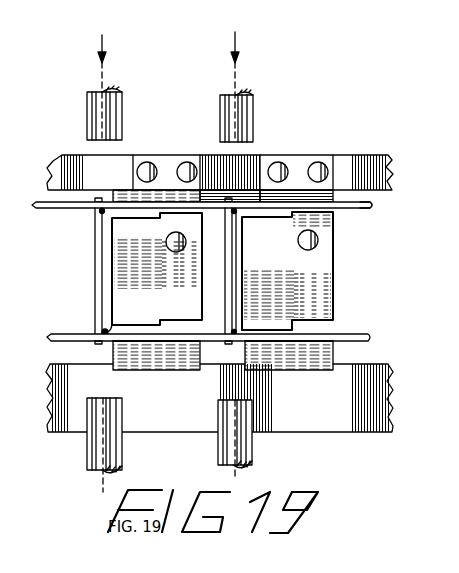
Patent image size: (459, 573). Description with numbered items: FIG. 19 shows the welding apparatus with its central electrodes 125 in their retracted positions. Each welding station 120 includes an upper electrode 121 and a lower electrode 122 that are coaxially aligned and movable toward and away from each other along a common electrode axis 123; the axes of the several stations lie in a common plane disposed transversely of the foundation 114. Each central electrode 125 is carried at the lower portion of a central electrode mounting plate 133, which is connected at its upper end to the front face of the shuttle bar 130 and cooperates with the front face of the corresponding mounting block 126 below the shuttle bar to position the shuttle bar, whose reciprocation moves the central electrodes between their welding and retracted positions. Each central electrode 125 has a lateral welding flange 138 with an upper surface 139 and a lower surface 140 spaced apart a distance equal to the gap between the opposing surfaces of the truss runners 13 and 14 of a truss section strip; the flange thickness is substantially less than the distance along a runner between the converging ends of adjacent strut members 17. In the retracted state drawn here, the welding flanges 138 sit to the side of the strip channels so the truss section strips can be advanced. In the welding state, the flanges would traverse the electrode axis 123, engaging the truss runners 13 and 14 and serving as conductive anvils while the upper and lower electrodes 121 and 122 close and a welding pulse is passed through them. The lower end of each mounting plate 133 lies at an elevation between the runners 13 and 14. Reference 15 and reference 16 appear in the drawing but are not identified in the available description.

The welding station 120 is at (166, 39).
The upper electrode 121 is at (90, 115).
The lower electrode 122 is at (92, 443).
The electrode axis 123 is at (100, 70).
The shuttle bar 130 is at (227, 152).
The central electrode mounting plate 133 is at (184, 155).
The upper surface of welding flange 139 is at (145, 210).
The truss runner 13 is at (101, 213).
The upper plate end 15 is at (371, 210).
The strut member 17 is at (98, 250).
The central electrode 125 is at (122, 269).
The lateral welding flange 138 is at (243, 265).
The truss runner 14 is at (108, 330).
The lower plate 16 is at (359, 333).
The mounting block 126 is at (163, 365).
The lower surface of welding flange 140 is at (123, 346).
The foundation 114 is at (390, 423).